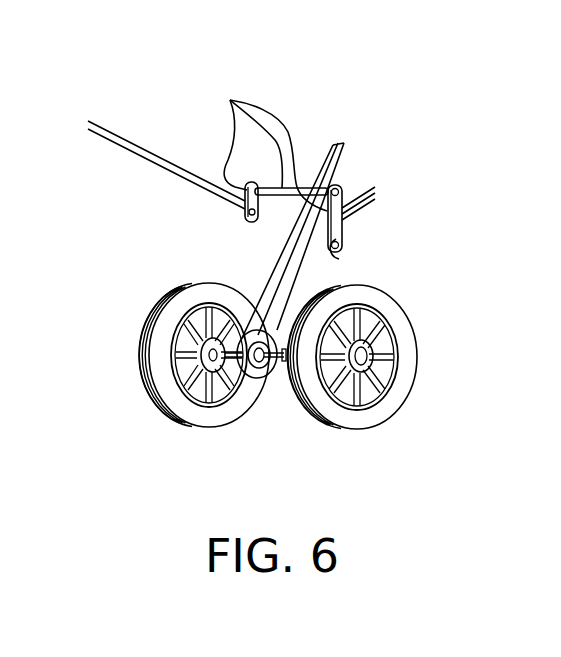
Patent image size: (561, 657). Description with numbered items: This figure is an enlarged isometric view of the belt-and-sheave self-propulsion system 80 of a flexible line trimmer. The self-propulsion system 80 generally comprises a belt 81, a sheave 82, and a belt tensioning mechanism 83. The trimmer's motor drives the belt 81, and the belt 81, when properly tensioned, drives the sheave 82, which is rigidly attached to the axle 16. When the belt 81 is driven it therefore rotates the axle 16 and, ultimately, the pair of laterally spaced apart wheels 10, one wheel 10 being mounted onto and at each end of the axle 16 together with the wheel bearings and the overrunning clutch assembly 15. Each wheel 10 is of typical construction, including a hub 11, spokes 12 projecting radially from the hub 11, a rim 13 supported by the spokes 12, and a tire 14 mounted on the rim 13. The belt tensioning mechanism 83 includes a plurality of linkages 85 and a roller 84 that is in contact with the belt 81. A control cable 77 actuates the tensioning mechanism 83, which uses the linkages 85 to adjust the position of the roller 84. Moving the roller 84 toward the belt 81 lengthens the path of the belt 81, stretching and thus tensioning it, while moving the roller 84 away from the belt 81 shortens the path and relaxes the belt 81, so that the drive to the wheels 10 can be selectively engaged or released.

The wheel 10 is at (277, 362).
The hub 11 is at (212, 355).
The spokes 12 is at (200, 318).
The rim 13 is at (173, 422).
The tire 14 is at (137, 373).
The clutch assembly 15 is at (372, 408).
The axle 16 is at (283, 400).
The control cable 77 is at (133, 143).
The self-propulsion system 80 is at (258, 175).
The belt 81 is at (280, 270).
The sheave 82 is at (262, 380).
The belt tensioning mechanism 83 is at (346, 181).
The roller 84 is at (320, 252).
The linkages 85 is at (266, 148).